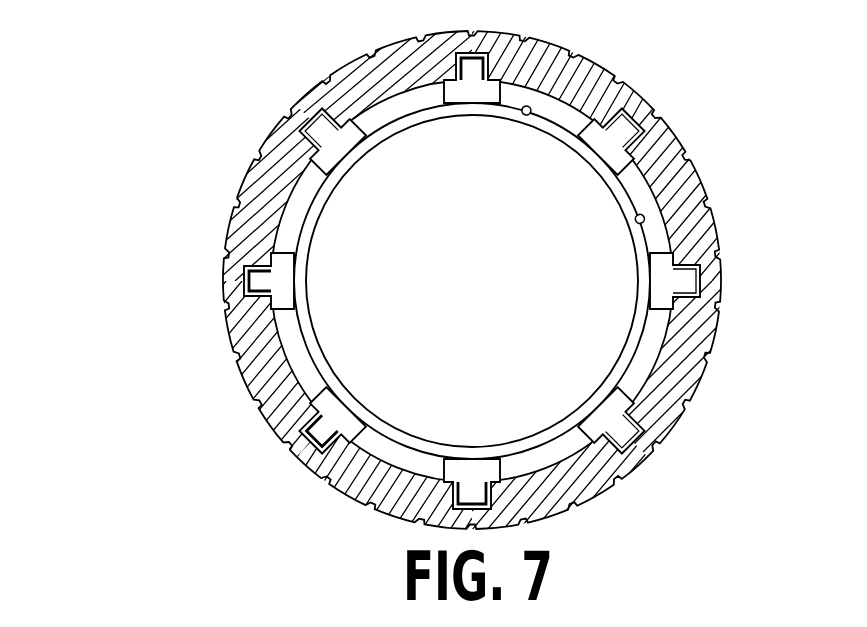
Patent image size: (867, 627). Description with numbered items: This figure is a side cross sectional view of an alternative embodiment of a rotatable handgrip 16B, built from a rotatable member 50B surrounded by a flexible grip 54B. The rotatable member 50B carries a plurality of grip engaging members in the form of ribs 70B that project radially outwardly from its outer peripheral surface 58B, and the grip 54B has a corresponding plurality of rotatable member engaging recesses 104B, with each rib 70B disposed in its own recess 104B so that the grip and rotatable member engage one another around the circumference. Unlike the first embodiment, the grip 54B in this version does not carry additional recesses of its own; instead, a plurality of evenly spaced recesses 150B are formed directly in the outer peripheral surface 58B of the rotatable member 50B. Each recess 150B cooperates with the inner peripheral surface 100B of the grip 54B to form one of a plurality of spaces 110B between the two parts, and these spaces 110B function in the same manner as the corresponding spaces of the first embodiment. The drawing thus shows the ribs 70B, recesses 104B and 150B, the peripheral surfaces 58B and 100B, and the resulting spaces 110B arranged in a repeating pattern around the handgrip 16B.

The rotatable handgrip 16B is at (133, 160).
The rotatable member 50B is at (538, 446).
The flexible grip 54B is at (355, 78).
The outer peripheral surface 58B is at (247, 298).
The rib 70B is at (283, 283).
The inner peripheral surface 100B is at (386, 99).
The rotatable member engaging recess 104B is at (230, 264).
The space 110B is at (566, 113).
The recess 150B is at (528, 112).